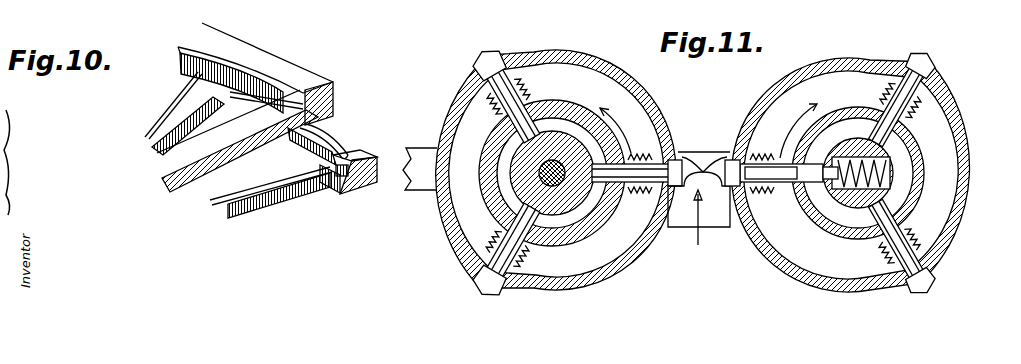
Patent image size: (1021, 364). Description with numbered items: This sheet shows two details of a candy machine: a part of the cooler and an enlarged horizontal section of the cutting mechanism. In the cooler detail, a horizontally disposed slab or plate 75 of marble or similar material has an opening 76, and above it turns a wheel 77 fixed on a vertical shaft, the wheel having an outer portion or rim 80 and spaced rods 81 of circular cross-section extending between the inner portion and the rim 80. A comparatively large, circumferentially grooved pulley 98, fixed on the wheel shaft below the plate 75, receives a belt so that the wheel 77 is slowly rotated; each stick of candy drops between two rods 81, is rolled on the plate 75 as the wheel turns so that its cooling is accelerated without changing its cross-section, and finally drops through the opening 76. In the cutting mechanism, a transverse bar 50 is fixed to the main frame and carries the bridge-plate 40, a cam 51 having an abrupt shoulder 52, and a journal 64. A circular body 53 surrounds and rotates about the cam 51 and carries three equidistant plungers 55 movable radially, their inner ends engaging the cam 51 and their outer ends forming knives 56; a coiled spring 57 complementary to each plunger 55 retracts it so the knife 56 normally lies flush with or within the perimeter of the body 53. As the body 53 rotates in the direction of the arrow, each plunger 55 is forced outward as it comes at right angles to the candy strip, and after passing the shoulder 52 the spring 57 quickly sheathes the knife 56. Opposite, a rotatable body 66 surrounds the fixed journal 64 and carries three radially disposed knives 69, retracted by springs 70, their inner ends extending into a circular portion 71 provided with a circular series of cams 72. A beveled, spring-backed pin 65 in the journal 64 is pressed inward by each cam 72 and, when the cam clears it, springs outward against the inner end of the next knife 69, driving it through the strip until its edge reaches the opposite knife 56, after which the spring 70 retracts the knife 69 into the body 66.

In FIG. 11, the bridge-plate 40 is at (683, 224).
In FIG. 11, the transverse bar 50 is at (413, 146).
In FIG. 11, the cam 51 is at (561, 150).
In FIG. 11, the abrupt shoulder 52 is at (569, 163).
In FIG. 11, the rotatable body 53 is at (449, 212).
In FIG. 11, the plunger 55 is at (522, 108).
In FIG. 11, the knife 56 is at (489, 54).
In FIG. 11, the coiled spring 57 is at (498, 98).
In FIG. 11, the journal 64 is at (900, 205).
In FIG. 11, the spring-backed pin 65 is at (814, 203).
In FIG. 11, the rotatable body 66 is at (834, 66).
In FIG. 11, the knife 69 is at (888, 118).
In FIG. 11, the spring 70 is at (935, 102).
In FIG. 11, the circular portion 71 is at (912, 160).
In FIG. 11, the cam 72 is at (960, 160).
In FIG. 10, the plate 75 is at (319, 60).
In FIG. 10, the opening 76 is at (205, 100).
In FIG. 10, the wheel 77 is at (248, 88).
In FIG. 10, the rim 80 is at (310, 107).
In FIG. 10, the rod 81 is at (165, 110).
In FIG. 10, the pulley 98 is at (343, 158).